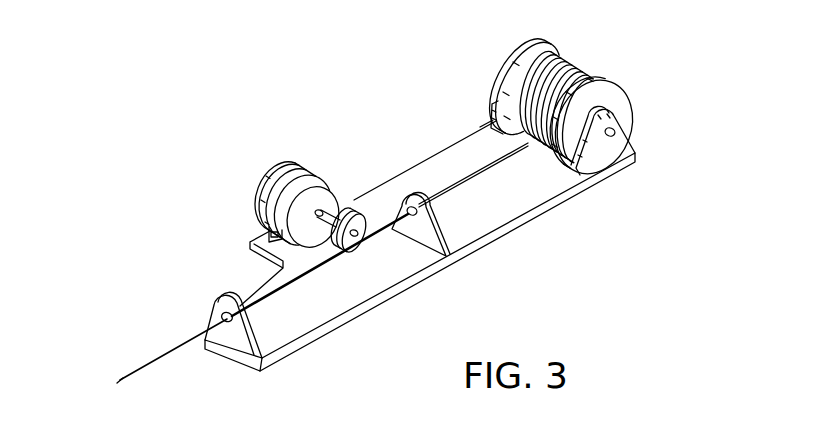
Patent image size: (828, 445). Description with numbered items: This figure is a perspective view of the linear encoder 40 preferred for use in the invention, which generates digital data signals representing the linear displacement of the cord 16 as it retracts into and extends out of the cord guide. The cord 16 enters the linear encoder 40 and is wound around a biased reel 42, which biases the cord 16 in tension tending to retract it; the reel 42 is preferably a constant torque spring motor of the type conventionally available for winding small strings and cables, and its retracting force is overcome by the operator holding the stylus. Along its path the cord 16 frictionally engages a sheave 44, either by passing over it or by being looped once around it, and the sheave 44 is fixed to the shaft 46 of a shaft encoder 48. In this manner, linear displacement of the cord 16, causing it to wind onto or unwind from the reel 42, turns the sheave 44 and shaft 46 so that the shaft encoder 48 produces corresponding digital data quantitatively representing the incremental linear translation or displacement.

The cord 16 is at (170, 348).
The linear encoder 40 is at (527, 221).
The biased reel 42 is at (617, 92).
The sheave 44 is at (358, 196).
The shaft 46 is at (331, 212).
The shaft encoder 48 is at (290, 178).